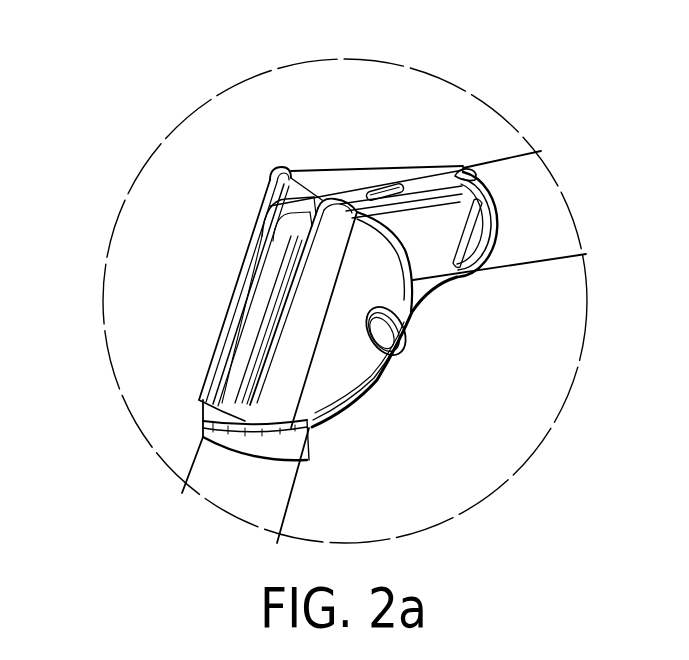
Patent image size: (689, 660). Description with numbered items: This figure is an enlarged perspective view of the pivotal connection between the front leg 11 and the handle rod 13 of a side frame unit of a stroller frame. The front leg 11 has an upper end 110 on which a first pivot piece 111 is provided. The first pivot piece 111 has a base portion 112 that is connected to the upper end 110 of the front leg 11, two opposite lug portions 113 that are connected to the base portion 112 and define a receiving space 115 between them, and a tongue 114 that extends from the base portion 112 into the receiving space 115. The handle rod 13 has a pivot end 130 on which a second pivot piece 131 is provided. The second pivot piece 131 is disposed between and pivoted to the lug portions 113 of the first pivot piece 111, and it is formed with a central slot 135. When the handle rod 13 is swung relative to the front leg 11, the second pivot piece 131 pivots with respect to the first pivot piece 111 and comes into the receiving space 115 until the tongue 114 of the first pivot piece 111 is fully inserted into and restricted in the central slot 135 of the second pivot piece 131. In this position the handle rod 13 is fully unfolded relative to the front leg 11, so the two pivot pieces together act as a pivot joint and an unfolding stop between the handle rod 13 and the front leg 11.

The front leg 11 is at (186, 462).
The handle rod 13 is at (541, 275).
The upper end 110 is at (200, 443).
The first pivot piece 111 is at (354, 425).
The base portion 112 is at (222, 422).
The lug portions 113 is at (271, 179).
The tongue 114 is at (263, 333).
The receiving space 115 is at (237, 350).
The pivot end 130 is at (497, 157).
The second pivot piece 131 is at (379, 182).
The central slot 135 is at (275, 240).